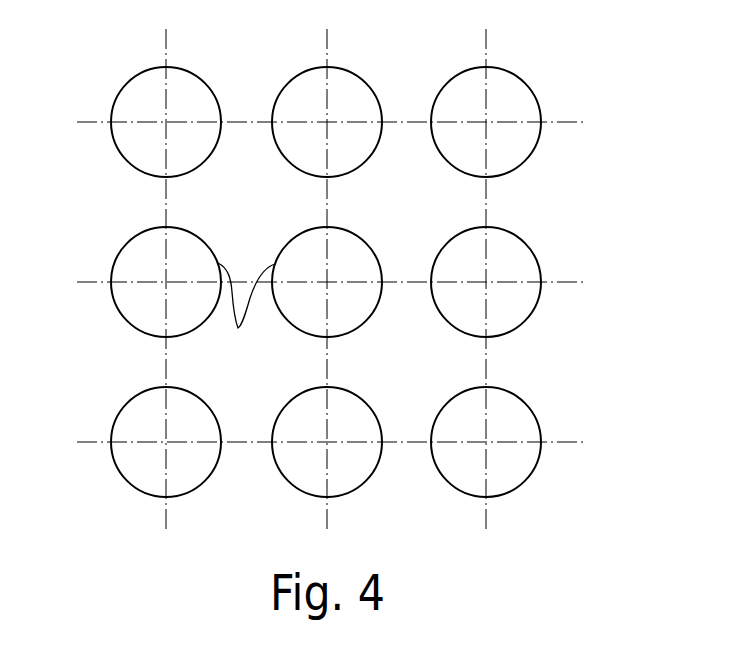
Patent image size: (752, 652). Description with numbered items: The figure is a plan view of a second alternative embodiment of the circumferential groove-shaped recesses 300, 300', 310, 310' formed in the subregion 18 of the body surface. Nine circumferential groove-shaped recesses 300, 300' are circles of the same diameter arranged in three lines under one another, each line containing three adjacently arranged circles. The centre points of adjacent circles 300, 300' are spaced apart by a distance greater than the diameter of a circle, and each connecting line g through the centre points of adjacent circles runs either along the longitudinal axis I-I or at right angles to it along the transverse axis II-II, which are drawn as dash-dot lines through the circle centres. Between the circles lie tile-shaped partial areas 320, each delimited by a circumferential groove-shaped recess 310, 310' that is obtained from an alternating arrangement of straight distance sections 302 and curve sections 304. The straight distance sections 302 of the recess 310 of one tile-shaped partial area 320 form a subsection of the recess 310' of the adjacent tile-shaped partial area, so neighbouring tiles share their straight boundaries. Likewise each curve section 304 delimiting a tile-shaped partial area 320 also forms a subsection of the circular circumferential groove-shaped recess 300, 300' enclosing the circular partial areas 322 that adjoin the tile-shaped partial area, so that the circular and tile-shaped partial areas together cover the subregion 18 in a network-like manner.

The subregion 18 is at (588, 345).
The circumferential groove-shaped recess 300 is at (325, 98).
The circumferential groove-shaped recess 300' is at (229, 185).
The distance section 302 is at (245, 122).
The curve section 304 is at (200, 170).
The circumferential groove-shaped recess 310 is at (170, 92).
The circumferential groove-shaped recess 310' is at (542, 280).
The tile-shaped partial area 320 is at (262, 182).
The circular partial area 322 is at (190, 266).
The connecting line g is at (165, 30).
The longitudinal axis I is at (326, 31).
The transverse axis II is at (78, 282).